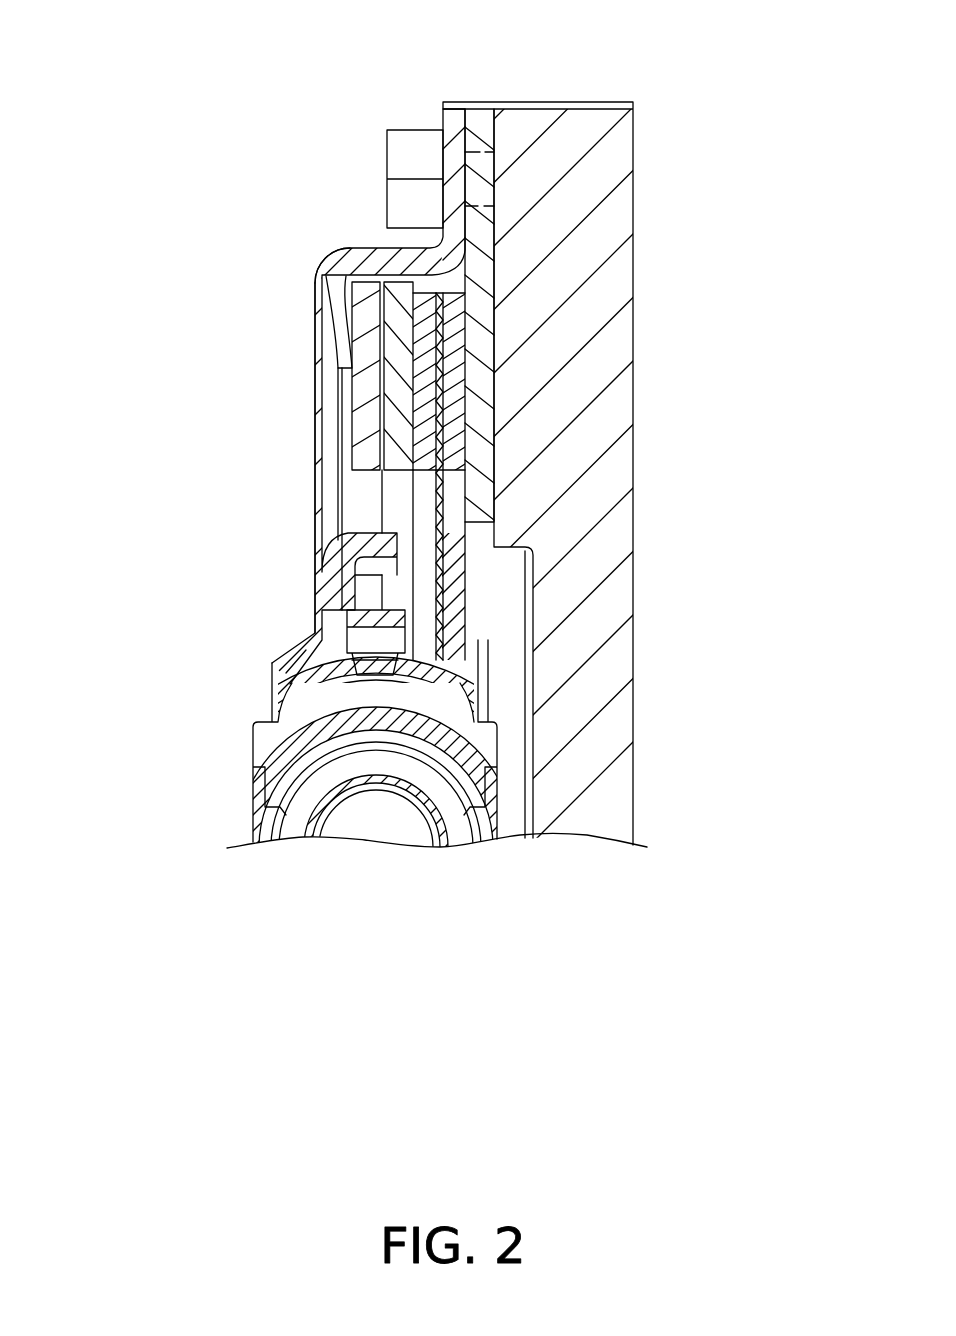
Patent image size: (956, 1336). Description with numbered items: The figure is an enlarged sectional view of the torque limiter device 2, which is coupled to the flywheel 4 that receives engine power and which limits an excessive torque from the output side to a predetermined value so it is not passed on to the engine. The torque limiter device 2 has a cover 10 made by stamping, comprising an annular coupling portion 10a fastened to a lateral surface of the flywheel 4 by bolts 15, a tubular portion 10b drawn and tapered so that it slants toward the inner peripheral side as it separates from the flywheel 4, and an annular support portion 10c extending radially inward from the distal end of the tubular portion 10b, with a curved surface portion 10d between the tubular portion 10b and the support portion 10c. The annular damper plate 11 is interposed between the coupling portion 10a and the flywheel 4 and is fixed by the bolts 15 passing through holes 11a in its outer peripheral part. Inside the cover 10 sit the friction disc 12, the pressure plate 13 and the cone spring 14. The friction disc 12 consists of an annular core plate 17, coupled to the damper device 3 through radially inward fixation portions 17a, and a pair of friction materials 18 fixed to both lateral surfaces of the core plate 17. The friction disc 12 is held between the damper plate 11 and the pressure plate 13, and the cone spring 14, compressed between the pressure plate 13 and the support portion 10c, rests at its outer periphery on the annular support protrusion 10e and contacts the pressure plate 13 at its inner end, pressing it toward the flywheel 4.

The torque limiter device 2 is at (300, 450).
The damper device 3 is at (236, 783).
The flywheel 4 is at (612, 142).
The cover 10 is at (313, 274).
The coupling portion 10a is at (458, 124).
The tubular portion 10b is at (392, 258).
The support portion 10c is at (318, 398).
The curved surface portion 10d is at (345, 260).
The support protrusion 10e is at (345, 333).
The damper plate 11 is at (480, 352).
The holes 11a is at (490, 165).
The friction disc 12 is at (480, 452).
The pressure plate 13 is at (412, 474).
The cone spring 14 is at (378, 461).
The bolts 15 is at (377, 130).
The core plate 17 is at (444, 496).
The fixation portions 17a is at (440, 565).
The friction materials 18 is at (452, 328).